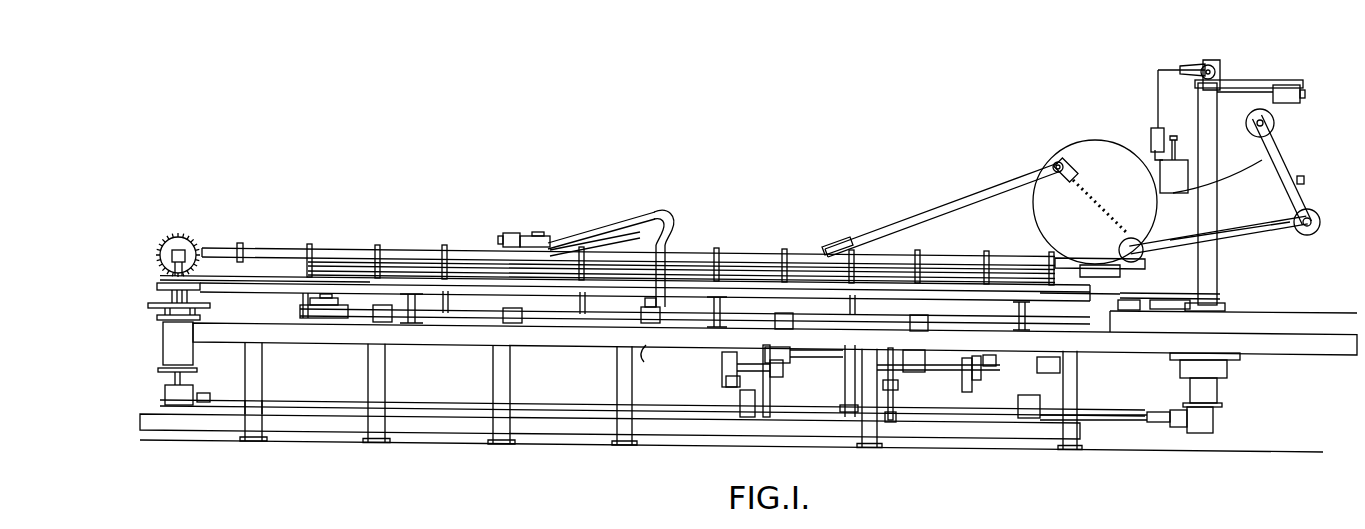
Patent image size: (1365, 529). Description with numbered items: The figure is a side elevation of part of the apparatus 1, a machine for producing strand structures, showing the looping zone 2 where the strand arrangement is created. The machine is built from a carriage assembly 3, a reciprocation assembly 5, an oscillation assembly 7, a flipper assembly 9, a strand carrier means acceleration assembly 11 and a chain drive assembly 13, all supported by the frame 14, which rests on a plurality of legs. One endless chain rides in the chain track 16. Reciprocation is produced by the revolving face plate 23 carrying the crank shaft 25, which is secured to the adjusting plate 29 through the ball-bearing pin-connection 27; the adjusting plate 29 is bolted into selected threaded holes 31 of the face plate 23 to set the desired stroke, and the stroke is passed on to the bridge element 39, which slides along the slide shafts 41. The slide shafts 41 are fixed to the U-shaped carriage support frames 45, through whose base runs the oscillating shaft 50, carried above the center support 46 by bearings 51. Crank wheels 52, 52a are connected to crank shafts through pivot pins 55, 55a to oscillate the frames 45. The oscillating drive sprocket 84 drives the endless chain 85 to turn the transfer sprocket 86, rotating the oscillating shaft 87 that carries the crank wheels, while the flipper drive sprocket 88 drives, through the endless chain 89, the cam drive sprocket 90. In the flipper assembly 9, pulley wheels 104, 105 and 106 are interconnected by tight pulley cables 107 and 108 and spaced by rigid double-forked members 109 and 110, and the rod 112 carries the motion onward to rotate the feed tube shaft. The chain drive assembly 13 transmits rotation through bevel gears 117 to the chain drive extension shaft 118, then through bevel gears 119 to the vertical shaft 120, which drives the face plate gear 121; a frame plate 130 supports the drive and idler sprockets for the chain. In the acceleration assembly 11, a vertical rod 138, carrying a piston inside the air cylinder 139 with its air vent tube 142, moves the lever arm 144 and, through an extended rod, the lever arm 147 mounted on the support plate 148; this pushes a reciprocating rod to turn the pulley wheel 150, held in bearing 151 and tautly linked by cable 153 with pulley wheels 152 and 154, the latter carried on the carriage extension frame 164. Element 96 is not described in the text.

The apparatus 1 is at (1258, 405).
The looping zone 2 is at (752, 243).
The carriage assembly 3 is at (348, 242).
The reciprocation assembly 5 is at (1017, 165).
The oscillation assembly 7 is at (790, 376).
The flipper assembly 9 is at (673, 209).
The strand carrier means acceleration assembly 11 is at (1284, 242).
The chain drive assembly 13 is at (154, 265).
The frame 14 is at (363, 338).
The chain track 16 is at (1104, 296).
The face plate 23 is at (1097, 150).
The crank shaft 25 is at (949, 209).
The ball-bearing pin-connection 27 is at (1057, 161).
The adjusting plate 29 is at (1080, 168).
The threaded holes 31 is at (1086, 198).
The bridge element 39 is at (383, 250).
The slide shaft 41 is at (217, 250).
The carriage support frame 45 is at (857, 275).
The center support 46 is at (465, 338).
The oscillating shaft 50 is at (721, 355).
The bearing 51 is at (511, 324).
The crank wheel 52 is at (982, 378).
The crank wheel 52a is at (742, 392).
The pivot pin 55 is at (996, 360).
The pivot pin 55a is at (724, 378).
The oscillating drive sprocket 84 is at (892, 422).
The endless chain 85 is at (894, 388).
The transfer sprocket 86 is at (886, 391).
The oscillating shaft 87 is at (940, 373).
The flipper drive sprocket 88 is at (843, 407).
The endless chain 89 is at (842, 397).
The cam drive sprocket 90 is at (843, 355).
The post 96 is at (767, 406).
The pulley wheel 104 is at (640, 348).
The pulley wheel 105 is at (680, 226).
The pulley wheel 106 is at (555, 247).
The pulley cable 107 is at (641, 310).
The pulley cable 108 is at (584, 247).
The rigid double-forked member 109 is at (661, 312).
The rigid double-forked member 110 is at (627, 240).
The rod 112 is at (536, 234).
The bevel gears 117 is at (1211, 423).
The chain drive extension shaft 118 is at (547, 413).
The bevel gears 119 is at (184, 398).
The vertical shaft 120 is at (174, 381).
The face plate gear 121 is at (185, 376).
The frame plate 130 is at (205, 303).
The vertical rod 138 is at (1157, 108).
The air cylinder 139 is at (1158, 162).
The air vent tube 142 is at (1164, 132).
The lever arm 144 is at (1167, 68).
The lever arm 147 is at (1216, 74).
The support plate 148 is at (1272, 83).
The pulley wheel 150 is at (1252, 128).
The bearing 151 is at (1303, 97).
The pulley wheel 152 is at (1316, 224).
The cable 153 is at (1304, 182).
The pulley wheel 154 is at (1131, 240).
The carriage extension frame 164 is at (1122, 274).